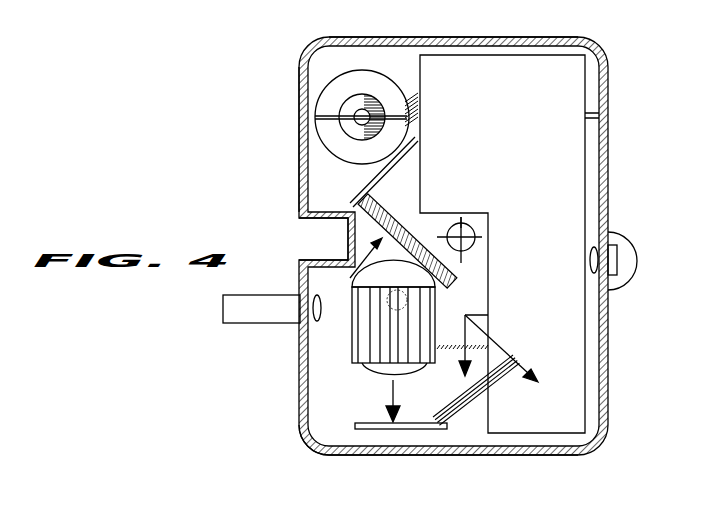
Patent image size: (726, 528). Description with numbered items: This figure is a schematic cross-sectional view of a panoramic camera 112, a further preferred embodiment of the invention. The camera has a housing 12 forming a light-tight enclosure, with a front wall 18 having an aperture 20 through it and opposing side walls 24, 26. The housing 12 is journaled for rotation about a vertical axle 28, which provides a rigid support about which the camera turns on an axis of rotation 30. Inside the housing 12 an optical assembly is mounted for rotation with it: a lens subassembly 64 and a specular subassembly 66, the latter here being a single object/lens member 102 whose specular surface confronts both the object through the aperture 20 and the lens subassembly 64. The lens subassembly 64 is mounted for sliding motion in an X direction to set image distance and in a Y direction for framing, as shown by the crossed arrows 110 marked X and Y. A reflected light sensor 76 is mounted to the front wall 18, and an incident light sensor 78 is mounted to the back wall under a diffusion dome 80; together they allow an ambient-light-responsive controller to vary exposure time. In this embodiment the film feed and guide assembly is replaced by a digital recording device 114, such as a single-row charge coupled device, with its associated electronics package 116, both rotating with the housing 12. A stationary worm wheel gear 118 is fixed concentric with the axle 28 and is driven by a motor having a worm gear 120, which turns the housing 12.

The housing 12 is at (611, 62).
The front wall 18 is at (300, 134).
The aperture 20 is at (327, 250).
The side wall 24 is at (421, 37).
The side wall 26 is at (495, 455).
The axle 28 is at (482, 248).
The axis of rotation 30 is at (468, 217).
The lens subassembly 64 is at (370, 343).
The specular subassembly 66 is at (352, 271).
The reflected light sensor 76 is at (232, 326).
The incident light sensor 78 is at (617, 260).
The diffusion dome 80 is at (627, 238).
The object/lens member 102 is at (388, 204).
The crossed arrows 110 is at (468, 314).
The panoramic camera 112 is at (272, 452).
The digital recording device 114 is at (423, 432).
The electronics package 116 is at (558, 128).
The worm wheel gear 118 is at (350, 180).
The worm gear 120 is at (367, 110).